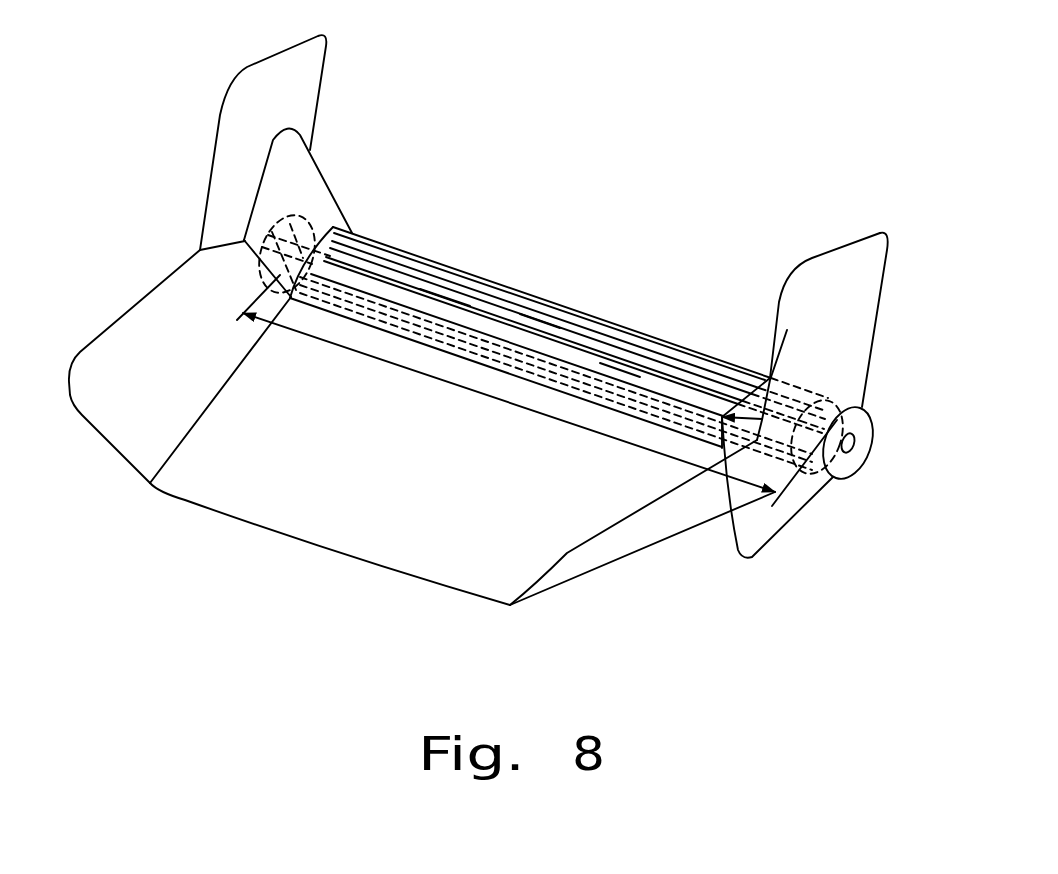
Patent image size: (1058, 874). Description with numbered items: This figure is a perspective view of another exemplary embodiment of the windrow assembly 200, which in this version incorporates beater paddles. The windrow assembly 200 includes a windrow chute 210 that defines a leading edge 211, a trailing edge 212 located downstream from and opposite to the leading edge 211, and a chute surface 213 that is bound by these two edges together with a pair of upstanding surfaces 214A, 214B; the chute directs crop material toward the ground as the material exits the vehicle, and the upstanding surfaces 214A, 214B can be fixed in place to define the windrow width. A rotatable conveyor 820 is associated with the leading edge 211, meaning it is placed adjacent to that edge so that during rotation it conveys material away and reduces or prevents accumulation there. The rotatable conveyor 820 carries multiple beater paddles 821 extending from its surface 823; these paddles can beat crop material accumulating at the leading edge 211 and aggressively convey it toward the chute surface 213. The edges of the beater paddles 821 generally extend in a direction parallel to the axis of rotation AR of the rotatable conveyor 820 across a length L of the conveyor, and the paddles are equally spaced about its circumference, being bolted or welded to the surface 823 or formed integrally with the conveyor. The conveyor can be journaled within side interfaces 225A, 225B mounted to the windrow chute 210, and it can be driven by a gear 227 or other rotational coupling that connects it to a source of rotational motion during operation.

The windrow assembly 200 is at (499, 340).
The windrow chute 210 is at (478, 340).
The leading edge 211 is at (371, 329).
The trailing edge 212 is at (223, 512).
The chute surface 213 is at (412, 493).
The upstanding surface 214A is at (170, 401).
The upstanding surface 214B is at (587, 549).
The side interface 225A is at (318, 187).
The side interface 225B is at (778, 352).
The gear 227 is at (853, 470).
The rotatable conveyor 820 is at (412, 256).
The beater paddles 821 is at (463, 306).
The surface 823 is at (549, 316).
The axis of rotation AR is at (622, 362).
The length L is at (461, 389).